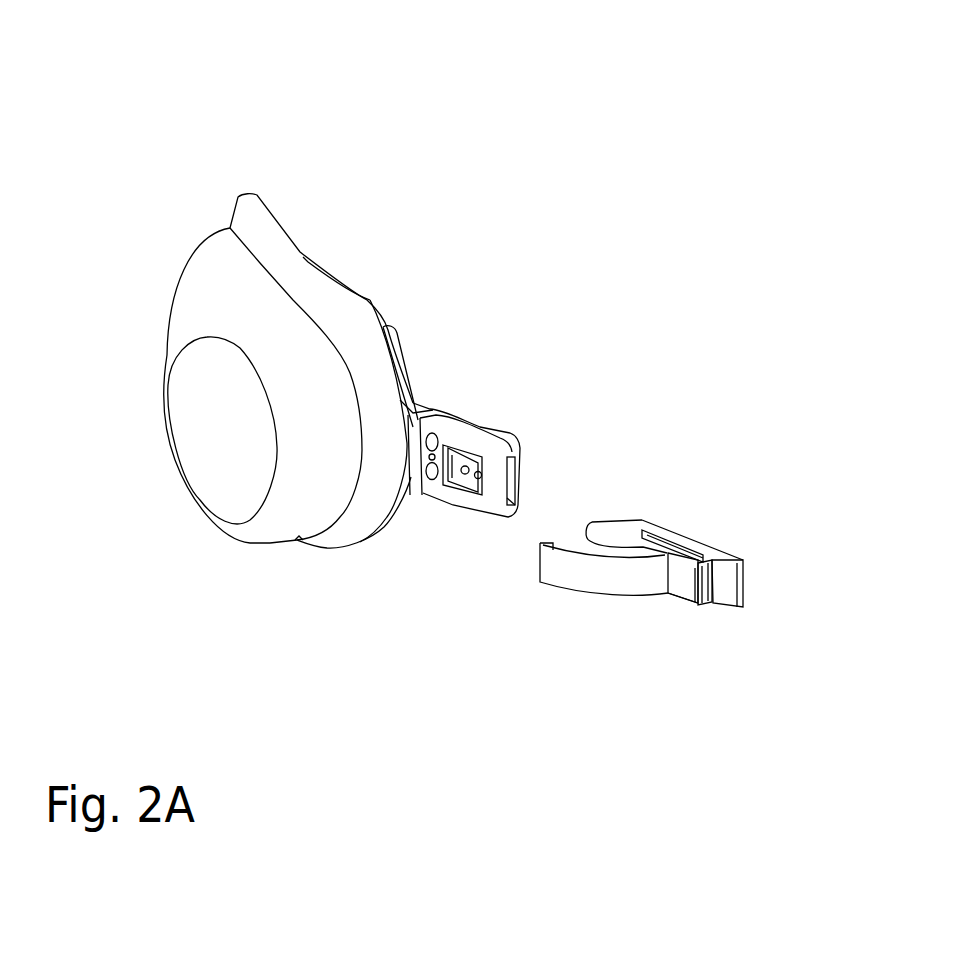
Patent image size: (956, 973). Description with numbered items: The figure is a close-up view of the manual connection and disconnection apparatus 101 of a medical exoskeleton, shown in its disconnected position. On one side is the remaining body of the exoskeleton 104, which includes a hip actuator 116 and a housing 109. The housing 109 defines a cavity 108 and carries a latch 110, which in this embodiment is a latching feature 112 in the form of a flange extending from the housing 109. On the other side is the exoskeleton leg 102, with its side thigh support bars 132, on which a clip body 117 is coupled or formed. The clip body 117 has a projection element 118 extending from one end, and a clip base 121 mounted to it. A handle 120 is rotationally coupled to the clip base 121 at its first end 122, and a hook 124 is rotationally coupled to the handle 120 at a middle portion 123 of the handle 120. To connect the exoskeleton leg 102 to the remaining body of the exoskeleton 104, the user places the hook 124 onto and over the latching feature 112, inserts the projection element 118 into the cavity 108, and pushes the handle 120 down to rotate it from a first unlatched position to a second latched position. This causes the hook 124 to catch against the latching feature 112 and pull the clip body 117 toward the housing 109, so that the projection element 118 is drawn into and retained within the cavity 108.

The apparatus 101 is at (553, 400).
The exoskeleton leg 102 is at (737, 310).
The remaining body of the exoskeleton 104 is at (332, 203).
The cavity 108 is at (507, 490).
The housing 109 is at (502, 435).
The latch 110 is at (455, 495).
The latching feature 112 is at (448, 472).
The hip actuator 116 is at (167, 353).
The clip body 117 is at (633, 530).
The projection element 118 is at (602, 523).
The handle 120 is at (696, 580).
The clip base 121 is at (706, 578).
The first end 122 is at (715, 560).
The middle portion 123 is at (663, 547).
The hook 124 is at (562, 583).
The side thigh support bars 132 is at (737, 585).